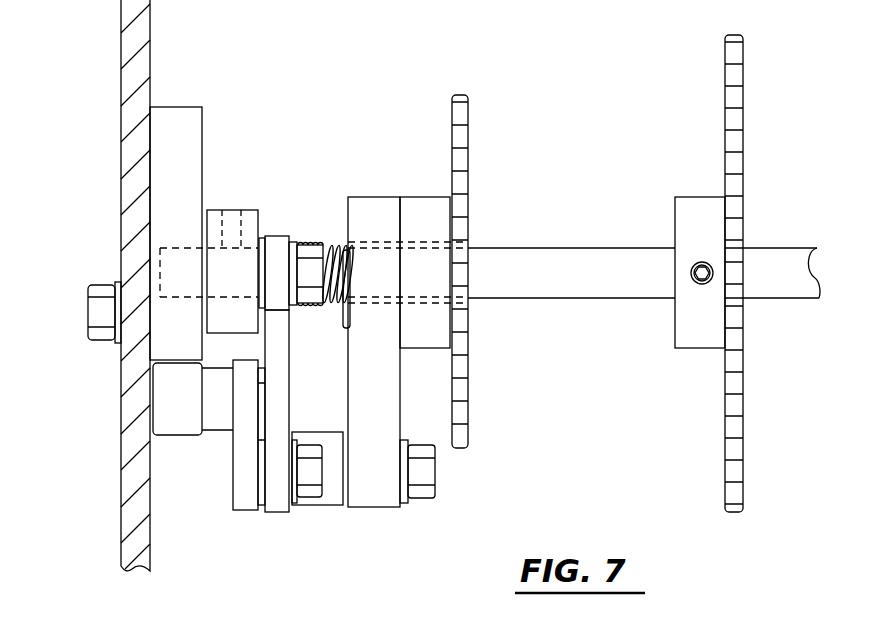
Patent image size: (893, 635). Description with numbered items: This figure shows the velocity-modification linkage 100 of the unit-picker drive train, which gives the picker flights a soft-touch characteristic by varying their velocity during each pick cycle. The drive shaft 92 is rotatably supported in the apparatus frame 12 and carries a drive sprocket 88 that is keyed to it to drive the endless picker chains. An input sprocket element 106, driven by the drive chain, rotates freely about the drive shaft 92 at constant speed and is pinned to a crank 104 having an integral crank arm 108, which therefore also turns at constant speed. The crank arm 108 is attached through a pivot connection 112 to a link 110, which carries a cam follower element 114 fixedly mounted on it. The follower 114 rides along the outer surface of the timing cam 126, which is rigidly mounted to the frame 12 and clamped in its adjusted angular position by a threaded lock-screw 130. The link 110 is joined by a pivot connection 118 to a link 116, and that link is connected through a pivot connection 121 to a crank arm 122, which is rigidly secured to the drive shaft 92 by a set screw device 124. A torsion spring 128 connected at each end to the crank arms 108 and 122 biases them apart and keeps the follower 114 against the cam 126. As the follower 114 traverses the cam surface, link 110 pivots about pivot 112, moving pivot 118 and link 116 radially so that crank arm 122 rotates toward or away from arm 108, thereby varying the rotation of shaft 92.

The apparatus frame 12 is at (136, 178).
The threaded lock-screw 130 is at (100, 313).
The timing cam 126 is at (186, 148).
The drive shaft 92 is at (181, 257).
The set screw device 124 is at (233, 216).
The crank arm 122 is at (254, 238).
The torsion spring 128 is at (339, 245).
The velocity-modification linkage 100 is at (422, 291).
The crank 104 is at (422, 301).
The sprocket element 106 is at (435, 207).
The crank arm 108 is at (366, 416).
The pivot connection 121 is at (306, 283).
The link 116 is at (289, 357).
The cam follower element 114 is at (177, 423).
The link 110 is at (253, 495).
The pivot connection 118 is at (313, 490).
The pivot connection 112 is at (330, 495).
The drive sprocket 88 is at (703, 210).